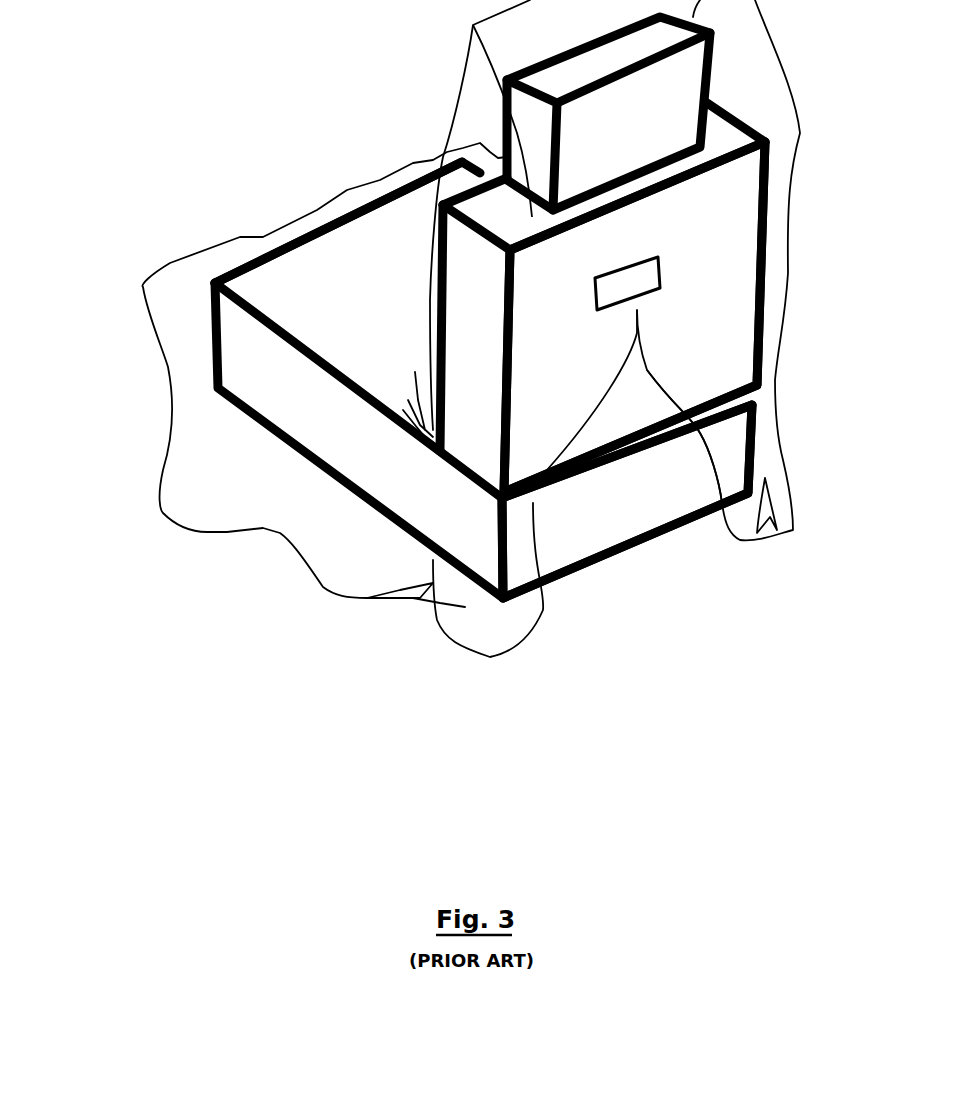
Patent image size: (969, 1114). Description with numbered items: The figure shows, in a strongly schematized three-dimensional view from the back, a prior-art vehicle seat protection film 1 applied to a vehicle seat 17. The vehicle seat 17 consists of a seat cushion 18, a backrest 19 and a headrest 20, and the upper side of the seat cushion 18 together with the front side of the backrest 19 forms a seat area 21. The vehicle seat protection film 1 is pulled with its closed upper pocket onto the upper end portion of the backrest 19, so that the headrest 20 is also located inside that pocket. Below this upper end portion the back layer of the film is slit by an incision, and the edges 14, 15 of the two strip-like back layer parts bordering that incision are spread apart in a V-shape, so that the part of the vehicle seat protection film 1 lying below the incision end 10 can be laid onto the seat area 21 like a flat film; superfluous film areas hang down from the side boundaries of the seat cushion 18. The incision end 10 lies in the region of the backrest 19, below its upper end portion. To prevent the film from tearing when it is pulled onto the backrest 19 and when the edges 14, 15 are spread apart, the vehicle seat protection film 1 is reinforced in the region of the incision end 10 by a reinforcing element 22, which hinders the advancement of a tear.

The vehicle seat protection film 1 is at (167, 365).
The incision end 10 is at (637, 300).
The edge of back layer part 14 is at (537, 532).
The edge of back layer part 15 is at (722, 518).
The vehicle seat 17 is at (730, 210).
The seat cushion 18 is at (323, 432).
The backrest 19 is at (722, 318).
The headrest 20 is at (660, 87).
The seat area 21 is at (323, 280).
The reinforcing element 22 is at (627, 277).